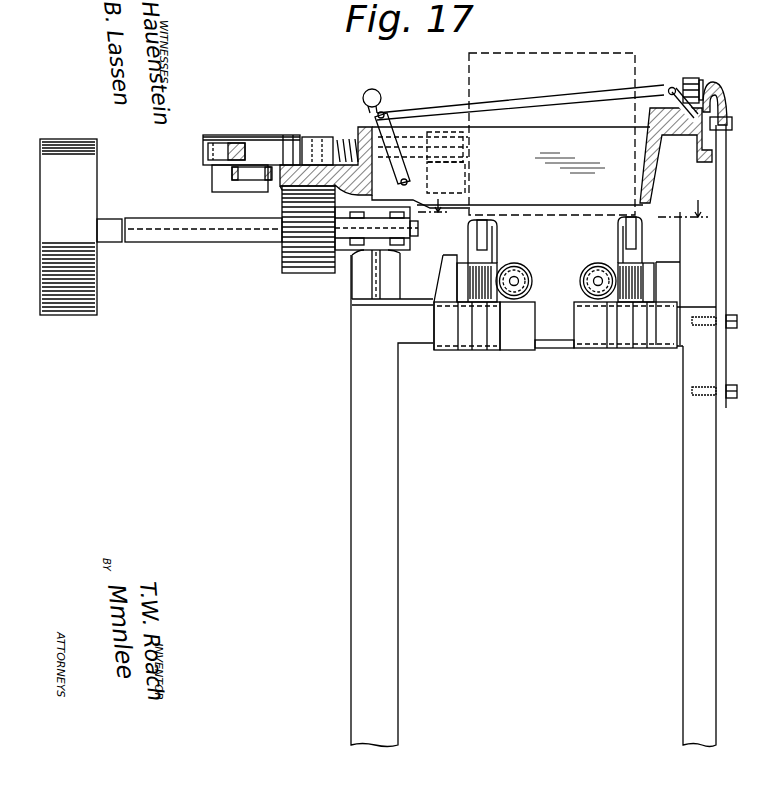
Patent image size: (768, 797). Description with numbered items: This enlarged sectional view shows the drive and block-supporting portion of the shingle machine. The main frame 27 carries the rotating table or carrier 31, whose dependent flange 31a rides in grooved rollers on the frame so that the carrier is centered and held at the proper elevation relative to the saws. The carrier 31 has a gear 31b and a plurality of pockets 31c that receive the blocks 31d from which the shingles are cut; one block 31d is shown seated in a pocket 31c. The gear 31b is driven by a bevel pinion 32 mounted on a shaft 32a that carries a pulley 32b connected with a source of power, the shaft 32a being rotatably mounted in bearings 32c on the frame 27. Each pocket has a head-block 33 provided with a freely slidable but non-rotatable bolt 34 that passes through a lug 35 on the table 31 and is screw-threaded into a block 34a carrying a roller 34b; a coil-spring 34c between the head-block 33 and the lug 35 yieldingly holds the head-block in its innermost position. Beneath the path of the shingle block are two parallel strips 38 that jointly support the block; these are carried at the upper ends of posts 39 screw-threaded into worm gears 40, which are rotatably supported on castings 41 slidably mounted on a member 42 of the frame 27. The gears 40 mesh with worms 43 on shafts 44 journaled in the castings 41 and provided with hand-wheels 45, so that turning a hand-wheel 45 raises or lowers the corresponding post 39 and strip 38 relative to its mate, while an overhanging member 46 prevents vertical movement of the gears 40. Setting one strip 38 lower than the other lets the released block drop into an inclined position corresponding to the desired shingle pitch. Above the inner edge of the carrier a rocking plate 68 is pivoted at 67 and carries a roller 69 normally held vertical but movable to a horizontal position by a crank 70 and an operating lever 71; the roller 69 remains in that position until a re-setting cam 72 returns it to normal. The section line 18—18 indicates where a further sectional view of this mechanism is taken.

The section line 18— 18 is at (563, 219).
The main frame 27 is at (398, 522).
The table or carrier 31 is at (293, 163).
The dependent flange 31a is at (382, 200).
The gear 31b is at (282, 189).
The pockets 31c is at (511, 166).
The shingle block 31d is at (530, 53).
The bevel pinion 32 is at (293, 273).
The shaft 32a is at (190, 242).
The pulley 32b is at (97, 297).
The bearings 32c is at (372, 247).
The head-block 33 is at (463, 138).
The bolt 34 is at (347, 136).
The block 34a is at (216, 192).
The roller 34b is at (232, 174).
The coil-spring 34c is at (356, 142).
The lug 35 is at (300, 140).
The strips 38 is at (487, 224).
The posts 39 is at (497, 240).
The worm gears 40 is at (457, 275).
The castings 41 is at (450, 350).
The member of the frame 42 is at (552, 348).
The worms 43 is at (520, 286).
The shafts 44 is at (570, 274).
The hand-wheels 45 is at (530, 269).
The overhanging member 46 is at (447, 257).
The pivot 67 is at (683, 120).
The rocking plate 68 is at (687, 78).
The roller 69 is at (701, 80).
The crank 70 is at (669, 89).
The operating lever 71 is at (383, 110).
The re-setting cam 72 is at (727, 100).